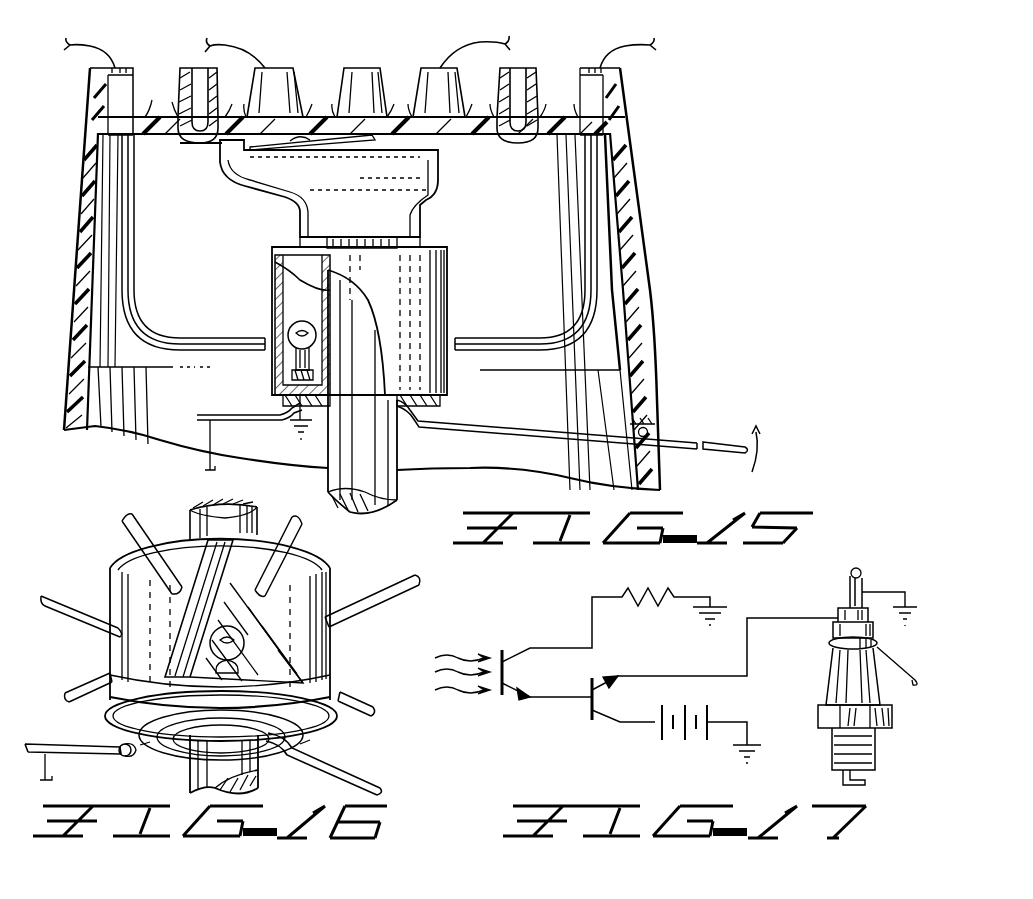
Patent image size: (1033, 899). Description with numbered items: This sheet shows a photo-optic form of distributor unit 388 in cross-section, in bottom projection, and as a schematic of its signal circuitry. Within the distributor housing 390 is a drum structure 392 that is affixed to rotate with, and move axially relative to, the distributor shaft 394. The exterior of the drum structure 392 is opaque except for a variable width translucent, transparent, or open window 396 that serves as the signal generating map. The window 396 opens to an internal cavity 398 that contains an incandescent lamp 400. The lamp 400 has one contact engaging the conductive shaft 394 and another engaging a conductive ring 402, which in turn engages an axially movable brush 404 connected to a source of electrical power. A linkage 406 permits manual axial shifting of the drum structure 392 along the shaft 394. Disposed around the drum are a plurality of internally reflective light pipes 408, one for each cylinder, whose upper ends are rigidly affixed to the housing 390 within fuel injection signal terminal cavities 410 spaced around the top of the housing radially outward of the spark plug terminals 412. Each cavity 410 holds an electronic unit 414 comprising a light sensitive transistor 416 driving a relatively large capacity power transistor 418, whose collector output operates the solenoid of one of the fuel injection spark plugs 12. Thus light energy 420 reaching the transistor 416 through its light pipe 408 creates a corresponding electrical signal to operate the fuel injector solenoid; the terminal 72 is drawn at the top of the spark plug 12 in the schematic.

In FIG. 15, the distributor unit 388 is at (690, 250).
In FIG. 15, the distributor housing 390 is at (648, 346).
In FIG. 15, the drum structure 392 is at (447, 262).
In FIG. 16, the drum structure 392 is at (332, 577).
In FIG. 15, the distributor shaft 394 is at (400, 465).
In FIG. 15, the window 396 is at (278, 295).
In FIG. 16, the window 396 is at (203, 610).
In FIG. 15, the internal cavity 398 is at (300, 275).
In FIG. 15, the incandescent lamp 400 is at (290, 325).
In FIG. 16, the conductive ring 402 is at (117, 745).
In FIG. 15, the brush 404 is at (248, 415).
In FIG. 16, the brush 404 is at (98, 757).
In FIG. 15, the linkage 406 is at (556, 430).
In FIG. 16, the linkage 406 is at (370, 783).
In FIG. 15, the light pipes 408 is at (196, 337).
In FIG. 16, the light pipes 408 is at (72, 605).
In FIG. 15, the fuel injection signal terminal cavities 410 is at (157, 55).
In FIG. 15, the spark plug terminals 412 is at (184, 66).
In FIG. 15, the electronic unit 414 is at (112, 100).
In FIG. 17, the electronic unit 414 is at (528, 716).
In FIG. 17, the light sensitive transistor 416 is at (498, 652).
In FIG. 17, the power transistor 418 is at (590, 712).
In FIG. 17, the light energy 420 is at (460, 690).
In FIG. 17, the fuel injection spark plug 12 is at (825, 675).
In FIG. 17, the terminal 72 is at (846, 584).